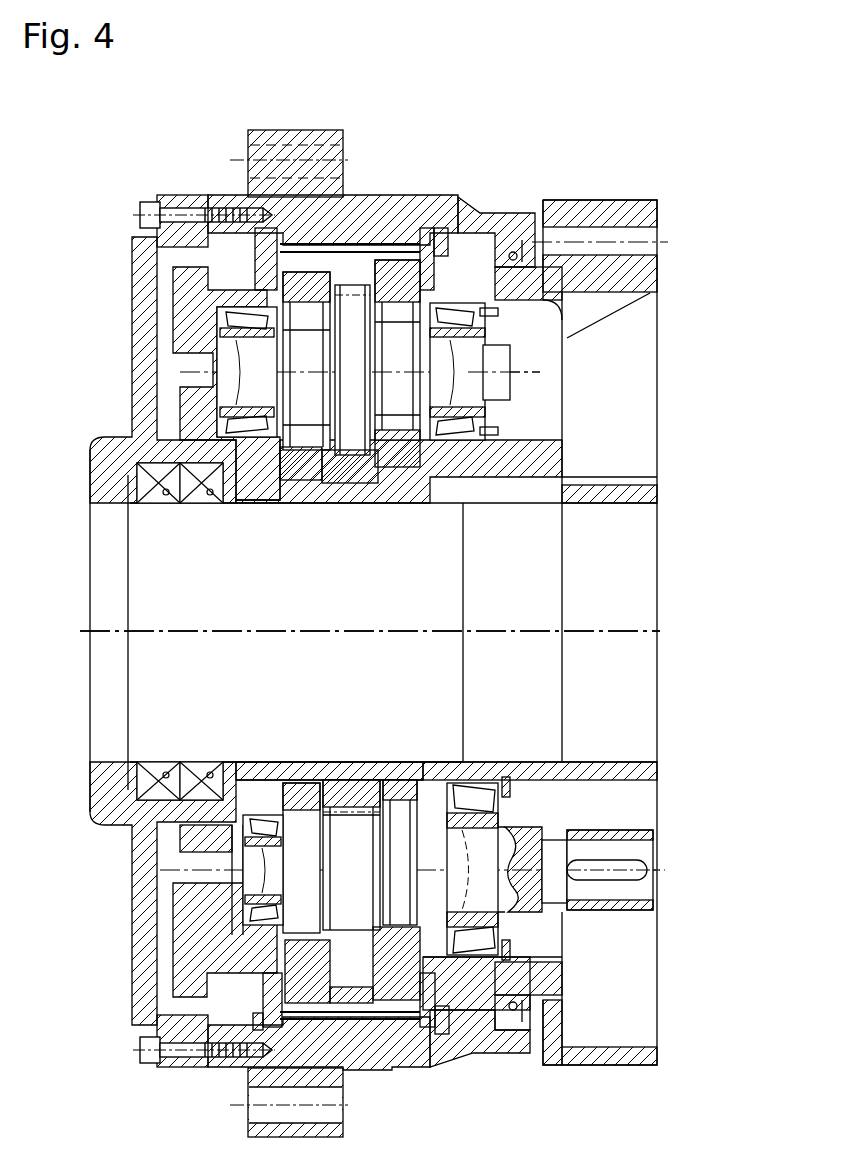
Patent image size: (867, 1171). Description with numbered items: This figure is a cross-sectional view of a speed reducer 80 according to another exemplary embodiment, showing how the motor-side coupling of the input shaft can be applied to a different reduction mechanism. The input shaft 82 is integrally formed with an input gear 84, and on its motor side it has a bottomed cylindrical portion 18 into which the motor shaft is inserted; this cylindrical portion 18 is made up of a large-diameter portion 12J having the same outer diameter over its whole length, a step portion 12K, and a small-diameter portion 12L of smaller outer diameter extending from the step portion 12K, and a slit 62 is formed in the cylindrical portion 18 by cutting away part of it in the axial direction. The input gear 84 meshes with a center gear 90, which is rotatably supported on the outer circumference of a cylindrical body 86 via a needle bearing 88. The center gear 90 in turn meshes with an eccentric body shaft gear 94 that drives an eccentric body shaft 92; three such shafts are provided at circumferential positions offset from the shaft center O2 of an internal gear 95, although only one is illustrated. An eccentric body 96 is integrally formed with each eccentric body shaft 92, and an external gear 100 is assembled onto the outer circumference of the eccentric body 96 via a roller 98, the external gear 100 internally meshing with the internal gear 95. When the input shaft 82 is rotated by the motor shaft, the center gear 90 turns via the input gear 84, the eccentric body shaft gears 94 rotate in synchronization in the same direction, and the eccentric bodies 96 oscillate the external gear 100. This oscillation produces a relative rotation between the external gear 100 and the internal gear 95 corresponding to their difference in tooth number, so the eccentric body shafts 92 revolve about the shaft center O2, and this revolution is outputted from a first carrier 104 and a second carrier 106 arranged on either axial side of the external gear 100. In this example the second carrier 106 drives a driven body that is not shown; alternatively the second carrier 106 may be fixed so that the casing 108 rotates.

The speed reducer 80 is at (583, 143).
The shaft center of the internal gear O2 is at (663, 631).
The first carrier 104 is at (253, 483).
The casing 108 is at (352, 200).
The input gear 84 is at (370, 238).
The internal gear 95 is at (393, 236).
The second carrier 106 is at (515, 488).
The eccentric body shaft gear 94 is at (420, 427).
The cylindrical body 86 is at (297, 762).
The eccentric body 96 is at (320, 360).
The external gear 100 is at (335, 485).
The roller 98 is at (313, 307).
The eccentric body shaft 92 is at (500, 383).
The needle bearing 88 is at (338, 772).
The center gear 90 is at (370, 772).
The input shaft 82 is at (530, 913).
The large-diameter portion 12J is at (503, 828).
The step portion 12K is at (581, 832).
The small-diameter portion 12L is at (627, 835).
The bottomed cylindrical portion 18 is at (633, 838).
The slit 62 is at (643, 902).